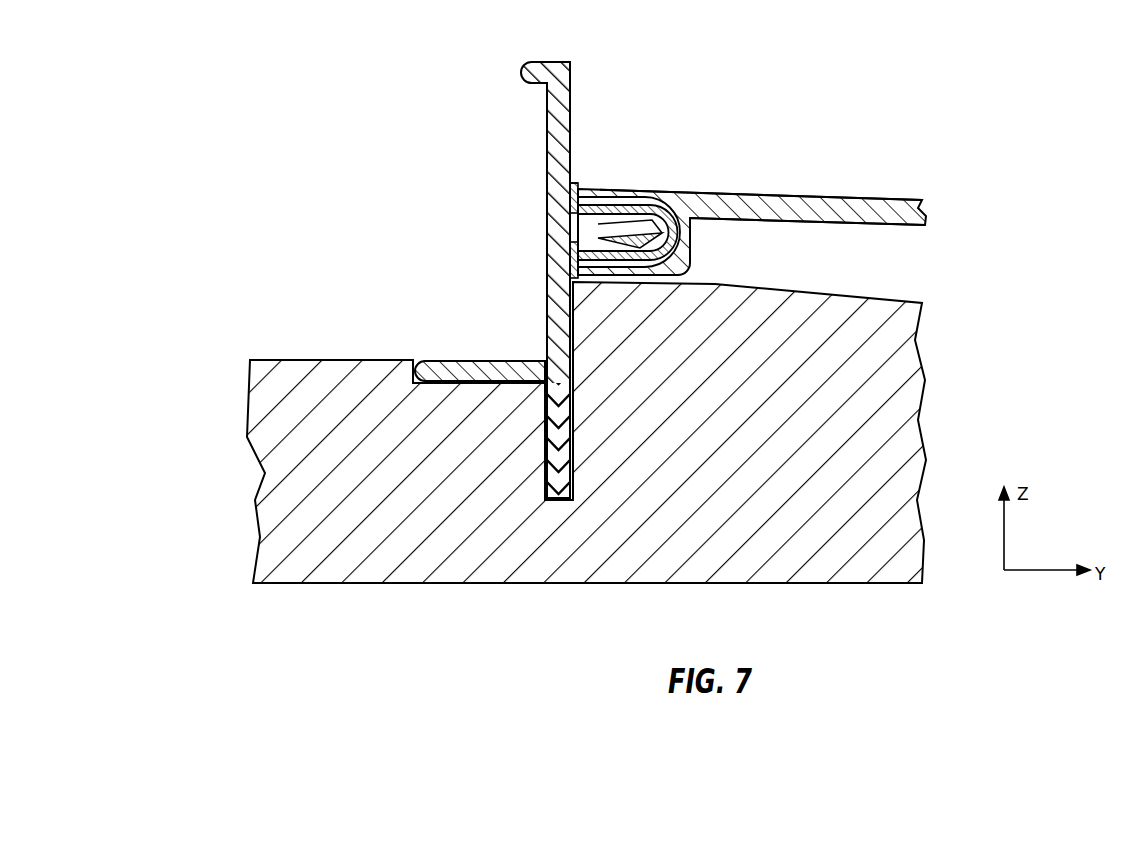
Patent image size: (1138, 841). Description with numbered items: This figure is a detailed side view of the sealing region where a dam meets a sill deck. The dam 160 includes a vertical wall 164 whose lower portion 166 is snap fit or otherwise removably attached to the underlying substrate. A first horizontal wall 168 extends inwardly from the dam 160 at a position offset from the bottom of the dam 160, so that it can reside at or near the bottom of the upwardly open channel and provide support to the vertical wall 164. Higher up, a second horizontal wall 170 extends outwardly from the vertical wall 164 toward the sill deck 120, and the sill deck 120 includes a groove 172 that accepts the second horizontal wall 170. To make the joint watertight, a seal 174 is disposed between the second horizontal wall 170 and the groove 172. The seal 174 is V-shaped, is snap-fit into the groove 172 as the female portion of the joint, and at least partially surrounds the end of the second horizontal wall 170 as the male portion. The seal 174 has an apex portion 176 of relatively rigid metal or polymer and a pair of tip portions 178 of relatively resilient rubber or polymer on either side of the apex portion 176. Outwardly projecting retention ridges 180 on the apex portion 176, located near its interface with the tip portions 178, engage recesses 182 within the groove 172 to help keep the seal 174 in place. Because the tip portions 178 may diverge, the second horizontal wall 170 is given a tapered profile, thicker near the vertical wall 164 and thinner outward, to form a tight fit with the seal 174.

The sill deck 120 is at (828, 200).
The dam 160 is at (570, 98).
The vertical wall 164 is at (547, 148).
The lower portion 166 is at (547, 352).
The first horizontal wall 168 is at (447, 360).
The second horizontal wall 170 is at (638, 210).
The groove 172 is at (675, 250).
The seal 174 is at (675, 230).
The apex portion 176 is at (670, 205).
The tip portions 178 is at (568, 201).
The retention ridges 180 is at (623, 200).
The recesses 182 is at (612, 200).